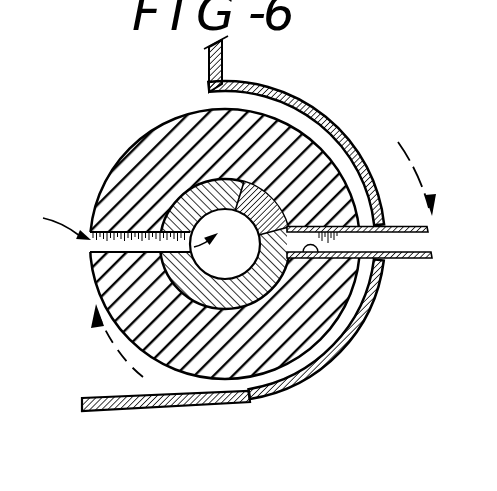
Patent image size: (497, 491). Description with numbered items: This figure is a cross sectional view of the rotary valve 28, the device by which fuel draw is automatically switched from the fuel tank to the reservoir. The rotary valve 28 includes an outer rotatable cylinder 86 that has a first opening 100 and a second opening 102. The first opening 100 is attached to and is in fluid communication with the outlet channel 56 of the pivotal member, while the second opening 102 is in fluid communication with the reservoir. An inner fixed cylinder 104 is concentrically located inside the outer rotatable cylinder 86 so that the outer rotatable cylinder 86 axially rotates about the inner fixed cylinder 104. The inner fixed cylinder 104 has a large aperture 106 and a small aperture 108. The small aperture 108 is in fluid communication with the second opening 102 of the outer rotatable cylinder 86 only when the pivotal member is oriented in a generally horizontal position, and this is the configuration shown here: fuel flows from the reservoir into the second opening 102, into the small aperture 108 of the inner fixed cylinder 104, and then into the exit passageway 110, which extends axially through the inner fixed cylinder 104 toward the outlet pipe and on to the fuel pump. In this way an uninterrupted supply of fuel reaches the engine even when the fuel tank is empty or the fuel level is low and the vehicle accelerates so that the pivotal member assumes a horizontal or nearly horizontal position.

The rotary valve 28 is at (333, 90).
The outlet channel 56 is at (403, 243).
The outer rotatable cylinder 86 is at (160, 133).
The first opening 100 is at (347, 258).
The second opening 102 is at (102, 256).
The inner fixed cylinder 104 is at (263, 282).
The large aperture 106 is at (263, 213).
The small aperture 108 is at (157, 232).
The exit passageway 110 is at (218, 262).